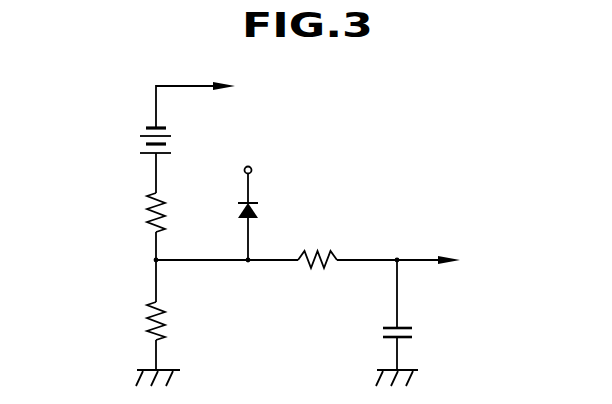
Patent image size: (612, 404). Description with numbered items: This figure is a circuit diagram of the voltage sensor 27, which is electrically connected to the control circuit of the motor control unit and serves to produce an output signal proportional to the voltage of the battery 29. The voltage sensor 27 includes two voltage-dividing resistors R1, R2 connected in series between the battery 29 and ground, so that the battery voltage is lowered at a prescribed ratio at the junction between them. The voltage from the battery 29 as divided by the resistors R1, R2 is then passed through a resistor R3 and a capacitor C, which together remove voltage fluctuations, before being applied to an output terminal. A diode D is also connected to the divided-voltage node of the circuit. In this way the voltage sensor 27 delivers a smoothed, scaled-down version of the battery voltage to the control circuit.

The battery 29 is at (142, 138).
The voltage-dividing resistor R1 is at (143, 213).
The voltage-dividing resistor R2 is at (152, 325).
The resistor R3 is at (318, 250).
The voltage sensor 27 is at (112, 263).
The diode D is at (257, 212).
The capacitor C is at (403, 325).